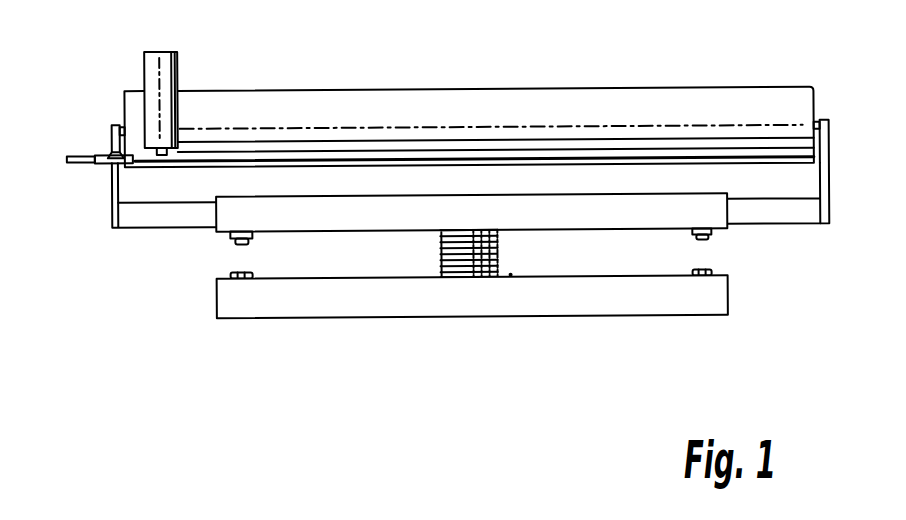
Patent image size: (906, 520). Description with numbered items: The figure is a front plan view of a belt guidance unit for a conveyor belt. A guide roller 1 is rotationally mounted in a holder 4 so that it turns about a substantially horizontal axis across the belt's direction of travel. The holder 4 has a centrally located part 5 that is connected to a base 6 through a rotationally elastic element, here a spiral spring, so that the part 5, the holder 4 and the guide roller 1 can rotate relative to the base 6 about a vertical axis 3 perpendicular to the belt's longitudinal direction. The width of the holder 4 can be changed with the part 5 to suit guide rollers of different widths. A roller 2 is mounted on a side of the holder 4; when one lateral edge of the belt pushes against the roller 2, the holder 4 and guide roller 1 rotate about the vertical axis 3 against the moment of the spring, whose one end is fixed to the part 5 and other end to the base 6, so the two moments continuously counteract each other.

The guide roller 1 is at (659, 107).
The roller 2 is at (178, 67).
The vertical axis 3 is at (460, 268).
The holder 4 is at (777, 215).
The centrally located part 5 is at (632, 217).
The base 6 is at (264, 300).